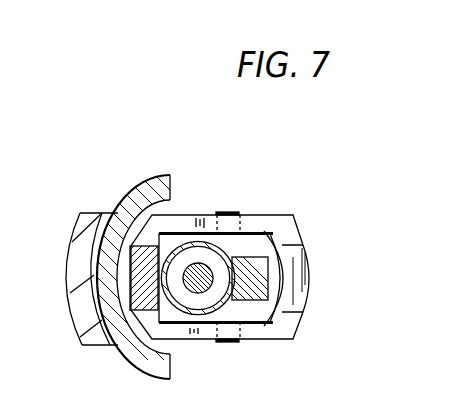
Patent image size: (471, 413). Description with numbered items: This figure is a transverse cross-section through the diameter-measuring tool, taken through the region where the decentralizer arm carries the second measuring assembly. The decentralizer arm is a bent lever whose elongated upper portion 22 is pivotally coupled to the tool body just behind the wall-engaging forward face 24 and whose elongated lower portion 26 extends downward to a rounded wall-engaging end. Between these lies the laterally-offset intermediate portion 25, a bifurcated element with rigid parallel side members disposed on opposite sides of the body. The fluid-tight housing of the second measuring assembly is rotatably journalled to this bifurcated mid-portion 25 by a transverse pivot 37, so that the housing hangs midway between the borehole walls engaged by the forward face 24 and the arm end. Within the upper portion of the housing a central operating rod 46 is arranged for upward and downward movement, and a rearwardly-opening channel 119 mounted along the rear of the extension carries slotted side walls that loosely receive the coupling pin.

The elongated upper portion 22 is at (140, 292).
The wall-engaging forward face 24 is at (77, 247).
The laterally-offset intermediate portion 25 is at (287, 226).
The elongated lower portion 26 is at (300, 283).
The transverse pivot 37 is at (235, 212).
The central operating rod 46 is at (198, 263).
The rearwardly-opening channel 119 is at (257, 292).